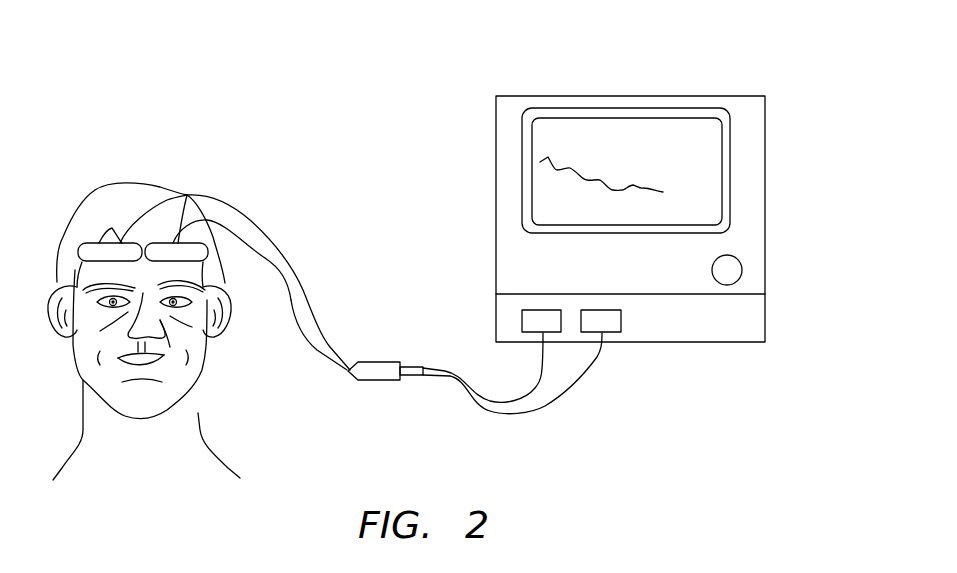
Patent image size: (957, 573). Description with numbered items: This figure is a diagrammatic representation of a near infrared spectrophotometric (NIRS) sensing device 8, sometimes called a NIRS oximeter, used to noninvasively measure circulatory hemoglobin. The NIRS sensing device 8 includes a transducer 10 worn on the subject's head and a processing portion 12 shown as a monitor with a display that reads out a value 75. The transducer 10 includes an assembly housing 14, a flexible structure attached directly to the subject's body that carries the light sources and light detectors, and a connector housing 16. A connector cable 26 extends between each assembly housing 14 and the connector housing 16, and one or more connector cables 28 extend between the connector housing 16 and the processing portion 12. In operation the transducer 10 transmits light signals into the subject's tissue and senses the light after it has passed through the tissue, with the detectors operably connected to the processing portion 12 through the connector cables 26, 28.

The NIRS sensing device 8 is at (128, 115).
The transducer 10 is at (154, 229).
The processing portion 12 is at (647, 186).
The assembly housing 14 is at (77, 250).
The connector housing 16 is at (383, 381).
The connector cable 26 is at (291, 279).
The connector cables 28 is at (540, 380).
The displayed oxygen saturation value 75 is at (618, 182).